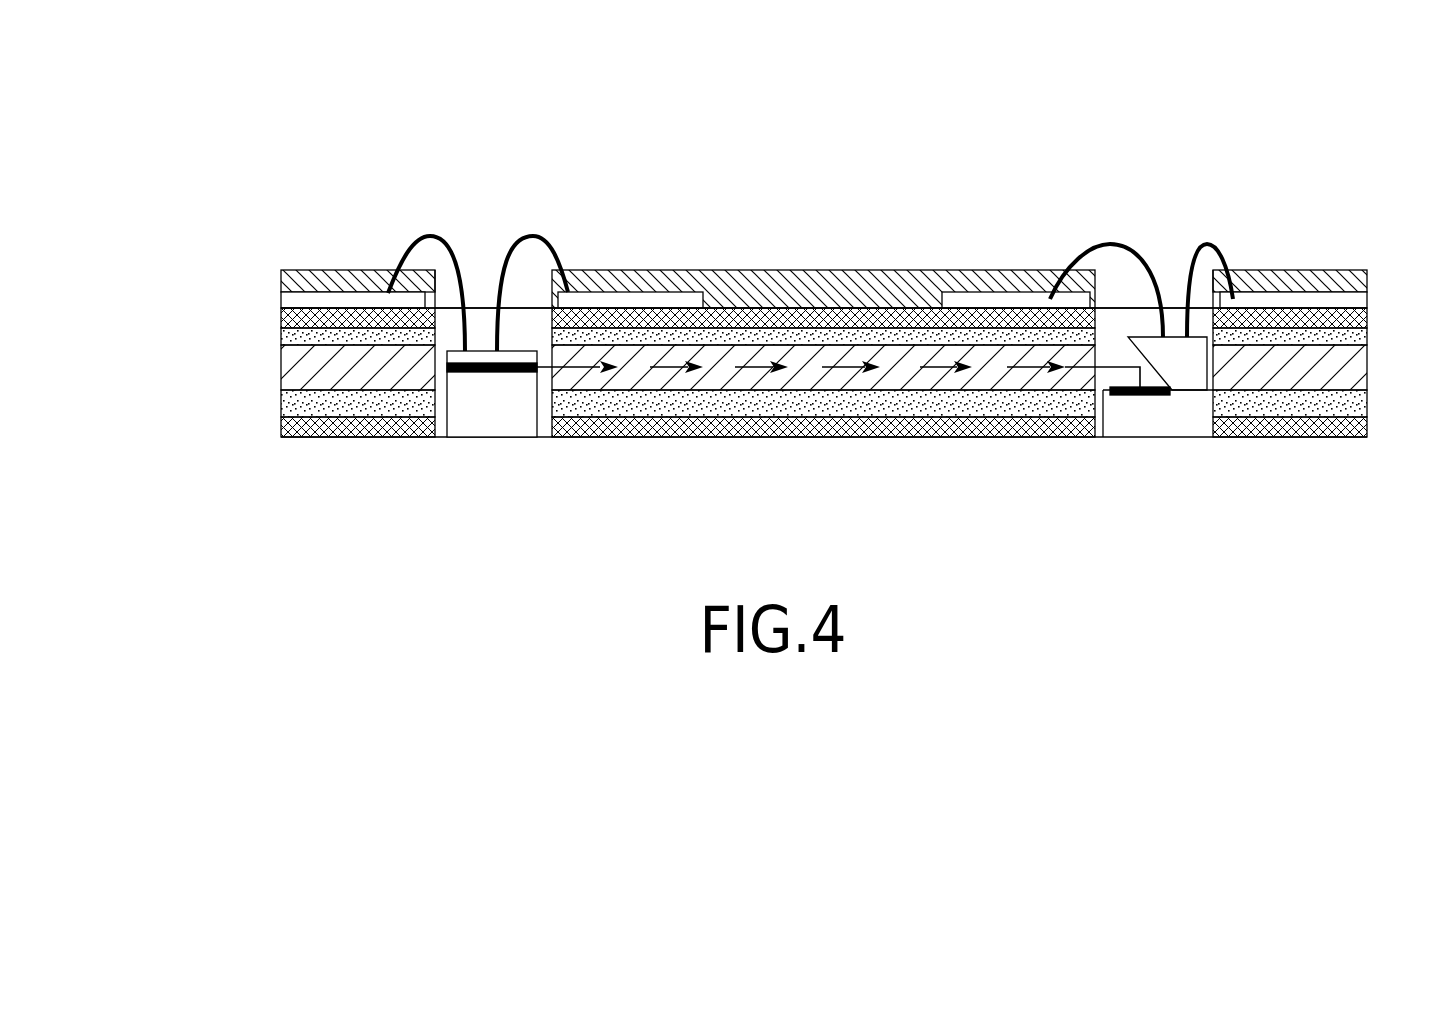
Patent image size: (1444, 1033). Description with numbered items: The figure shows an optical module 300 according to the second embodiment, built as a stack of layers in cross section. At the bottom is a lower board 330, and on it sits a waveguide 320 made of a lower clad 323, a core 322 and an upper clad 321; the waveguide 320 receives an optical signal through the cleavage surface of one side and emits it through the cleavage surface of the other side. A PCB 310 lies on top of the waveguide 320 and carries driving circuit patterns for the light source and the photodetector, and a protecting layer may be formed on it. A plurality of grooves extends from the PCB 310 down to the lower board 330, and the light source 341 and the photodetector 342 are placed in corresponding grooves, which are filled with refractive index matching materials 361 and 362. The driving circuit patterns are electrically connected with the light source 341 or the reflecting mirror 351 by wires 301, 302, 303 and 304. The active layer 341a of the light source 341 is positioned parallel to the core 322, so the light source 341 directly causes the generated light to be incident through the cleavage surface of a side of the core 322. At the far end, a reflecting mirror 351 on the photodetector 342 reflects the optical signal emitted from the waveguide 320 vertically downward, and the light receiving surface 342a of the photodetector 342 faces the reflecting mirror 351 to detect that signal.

The optical module 300 is at (812, 71).
The wire 301 is at (412, 238).
The wire 302 is at (532, 235).
The wire 303 is at (1108, 243).
The wire 304 is at (1205, 243).
The PCB 310 is at (1375, 270).
The waveguide 320 is at (729, 367).
The upper clad 321 is at (282, 336).
The core 322 is at (282, 368).
The lower clad 323 is at (282, 403).
The lower board 330 is at (356, 427).
The light source 341 is at (465, 423).
The active layer 341a is at (517, 373).
The photodetector 342 is at (1200, 424).
The light receiving surface 342a is at (1120, 398).
The reflecting mirror 351 is at (1182, 350).
The refractive index matching material 361 is at (480, 338).
The refractive index matching material 362 is at (1173, 316).